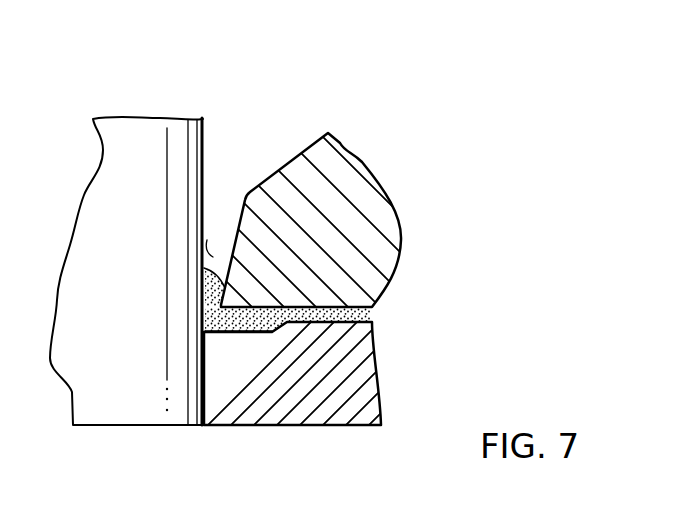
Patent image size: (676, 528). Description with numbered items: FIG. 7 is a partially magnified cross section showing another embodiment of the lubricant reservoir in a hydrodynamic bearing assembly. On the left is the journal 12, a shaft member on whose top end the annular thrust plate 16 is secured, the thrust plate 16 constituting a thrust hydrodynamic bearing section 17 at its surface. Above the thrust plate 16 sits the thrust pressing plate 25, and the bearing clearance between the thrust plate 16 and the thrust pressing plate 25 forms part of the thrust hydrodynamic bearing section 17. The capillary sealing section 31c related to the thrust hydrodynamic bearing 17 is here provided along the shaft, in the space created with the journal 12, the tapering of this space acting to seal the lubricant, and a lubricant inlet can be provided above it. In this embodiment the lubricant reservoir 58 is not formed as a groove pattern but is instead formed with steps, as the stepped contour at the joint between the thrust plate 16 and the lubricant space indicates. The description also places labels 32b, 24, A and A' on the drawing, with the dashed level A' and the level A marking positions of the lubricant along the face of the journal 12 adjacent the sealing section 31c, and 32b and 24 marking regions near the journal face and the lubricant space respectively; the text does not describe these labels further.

The journal 12 is at (136, 140).
The conductive layer on board surface 32b is at (265, 138).
The capillary sealing section 31c is at (223, 207).
The thrust pressing plate 25 is at (351, 180).
The thrust hydrodynamic bearing section 17 is at (330, 306).
The thrust plate 16 is at (352, 350).
The solder pad 24 is at (207, 323).
The lubricant reservoir 58 is at (272, 332).
The solder level A is at (140, 282).
The solder level A prime A' is at (148, 225).